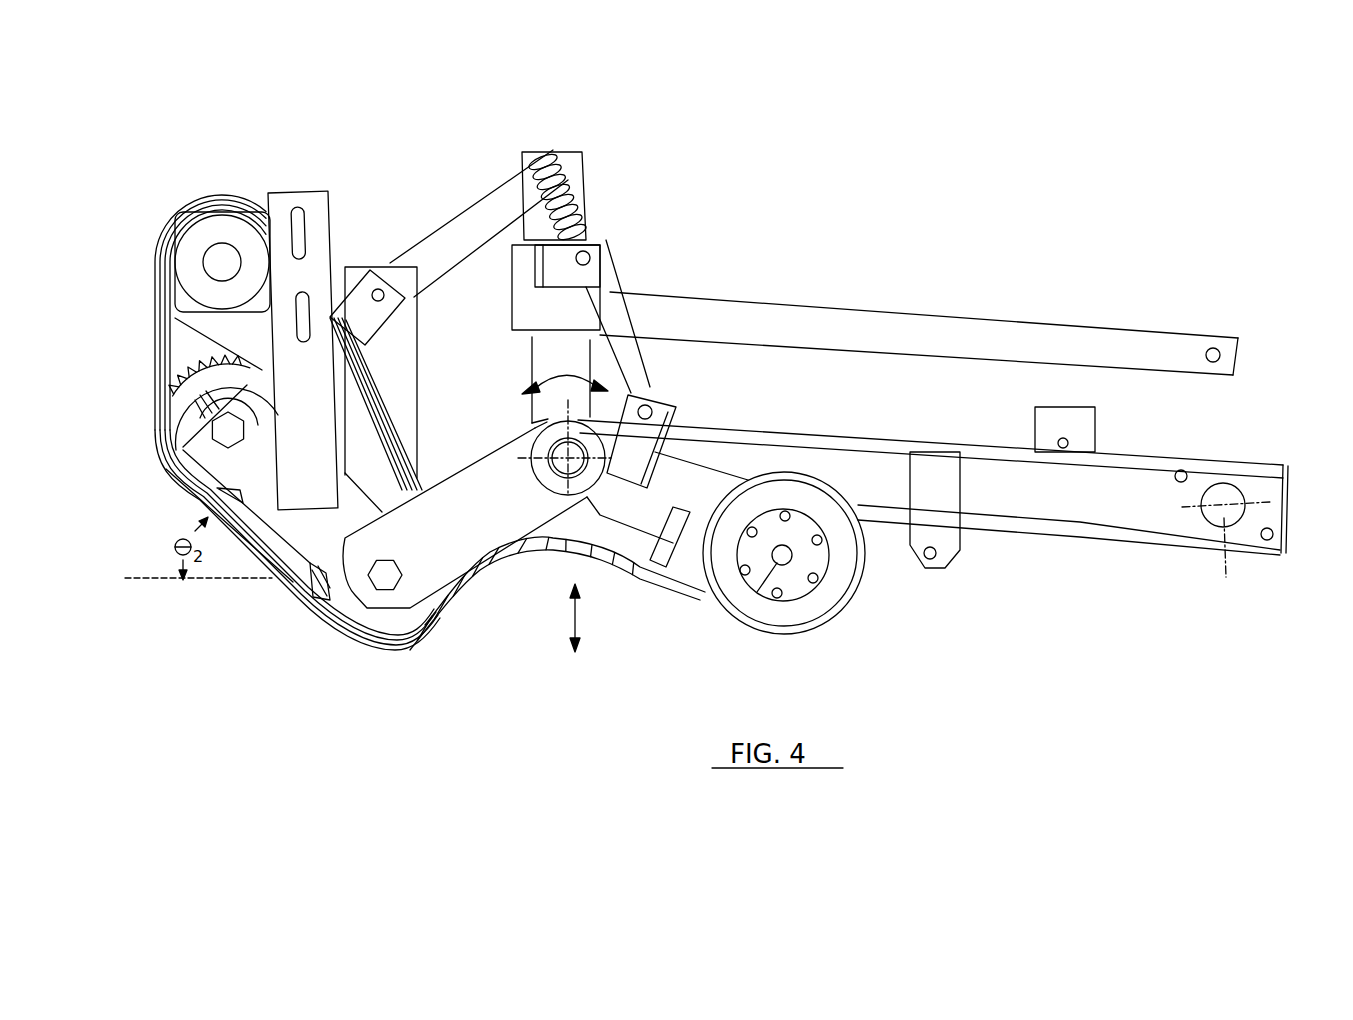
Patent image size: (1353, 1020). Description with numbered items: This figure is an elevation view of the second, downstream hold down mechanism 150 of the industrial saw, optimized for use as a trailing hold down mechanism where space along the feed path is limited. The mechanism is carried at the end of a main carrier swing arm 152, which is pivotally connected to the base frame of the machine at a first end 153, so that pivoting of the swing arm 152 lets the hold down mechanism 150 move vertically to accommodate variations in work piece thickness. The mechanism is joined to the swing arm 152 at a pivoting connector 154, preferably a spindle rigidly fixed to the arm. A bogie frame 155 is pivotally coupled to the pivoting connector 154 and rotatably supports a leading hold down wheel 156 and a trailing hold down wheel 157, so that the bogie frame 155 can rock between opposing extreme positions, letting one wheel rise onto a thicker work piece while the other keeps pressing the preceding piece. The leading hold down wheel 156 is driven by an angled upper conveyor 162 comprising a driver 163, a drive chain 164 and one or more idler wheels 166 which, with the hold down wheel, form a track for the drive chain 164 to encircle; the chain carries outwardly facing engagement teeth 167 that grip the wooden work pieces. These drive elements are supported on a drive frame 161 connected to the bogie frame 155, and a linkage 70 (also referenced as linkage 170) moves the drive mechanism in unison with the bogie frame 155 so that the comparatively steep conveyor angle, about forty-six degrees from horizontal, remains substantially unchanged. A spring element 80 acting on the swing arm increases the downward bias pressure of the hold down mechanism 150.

The spring element 80 is at (600, 168).
The hold down mechanism 150 is at (688, 190).
The linkage 170 is at (447, 204).
The driver 163 is at (222, 228).
The engagement teeth 167 is at (152, 307).
The idler wheel 166 is at (187, 418).
The drive frame 161 is at (247, 467).
The upper conveyor 162 is at (270, 606).
The drive chain 164 is at (368, 410).
The pivoting connector 154 is at (578, 448).
The bogie frame 155 is at (687, 474).
The trailing hold down wheel 157 is at (794, 637).
The leading hold down wheel 156 is at (403, 618).
The linkage 70 is at (796, 292).
The main carrier swing arm 152 is at (1114, 455).
The first end 153 is at (1232, 487).